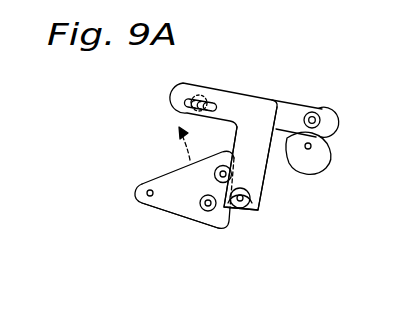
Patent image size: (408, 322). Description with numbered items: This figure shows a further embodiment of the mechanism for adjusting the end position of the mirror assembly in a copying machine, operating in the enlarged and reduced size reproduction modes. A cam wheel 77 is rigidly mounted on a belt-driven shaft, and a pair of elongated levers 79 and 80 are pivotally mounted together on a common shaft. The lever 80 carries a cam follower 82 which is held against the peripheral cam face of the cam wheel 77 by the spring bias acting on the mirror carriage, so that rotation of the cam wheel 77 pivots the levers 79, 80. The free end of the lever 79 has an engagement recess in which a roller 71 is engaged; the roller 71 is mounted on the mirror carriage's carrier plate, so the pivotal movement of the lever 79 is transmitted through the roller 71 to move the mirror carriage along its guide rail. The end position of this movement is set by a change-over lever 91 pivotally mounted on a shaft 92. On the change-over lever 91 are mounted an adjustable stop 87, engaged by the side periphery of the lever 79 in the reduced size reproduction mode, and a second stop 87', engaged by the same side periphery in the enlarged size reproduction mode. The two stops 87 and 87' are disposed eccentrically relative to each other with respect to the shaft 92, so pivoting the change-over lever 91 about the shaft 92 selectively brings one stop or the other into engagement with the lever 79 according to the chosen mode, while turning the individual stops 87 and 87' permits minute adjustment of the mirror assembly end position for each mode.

The roller 71 is at (240, 210).
The cam wheel 77 is at (318, 158).
The lever 79 is at (253, 172).
The lever 80 is at (289, 110).
The cam follower 82 is at (321, 117).
The adjustable stop 87 is at (177, 152).
The stop 87' is at (190, 246).
The change-over lever 91 is at (162, 203).
The shaft 92 is at (145, 192).